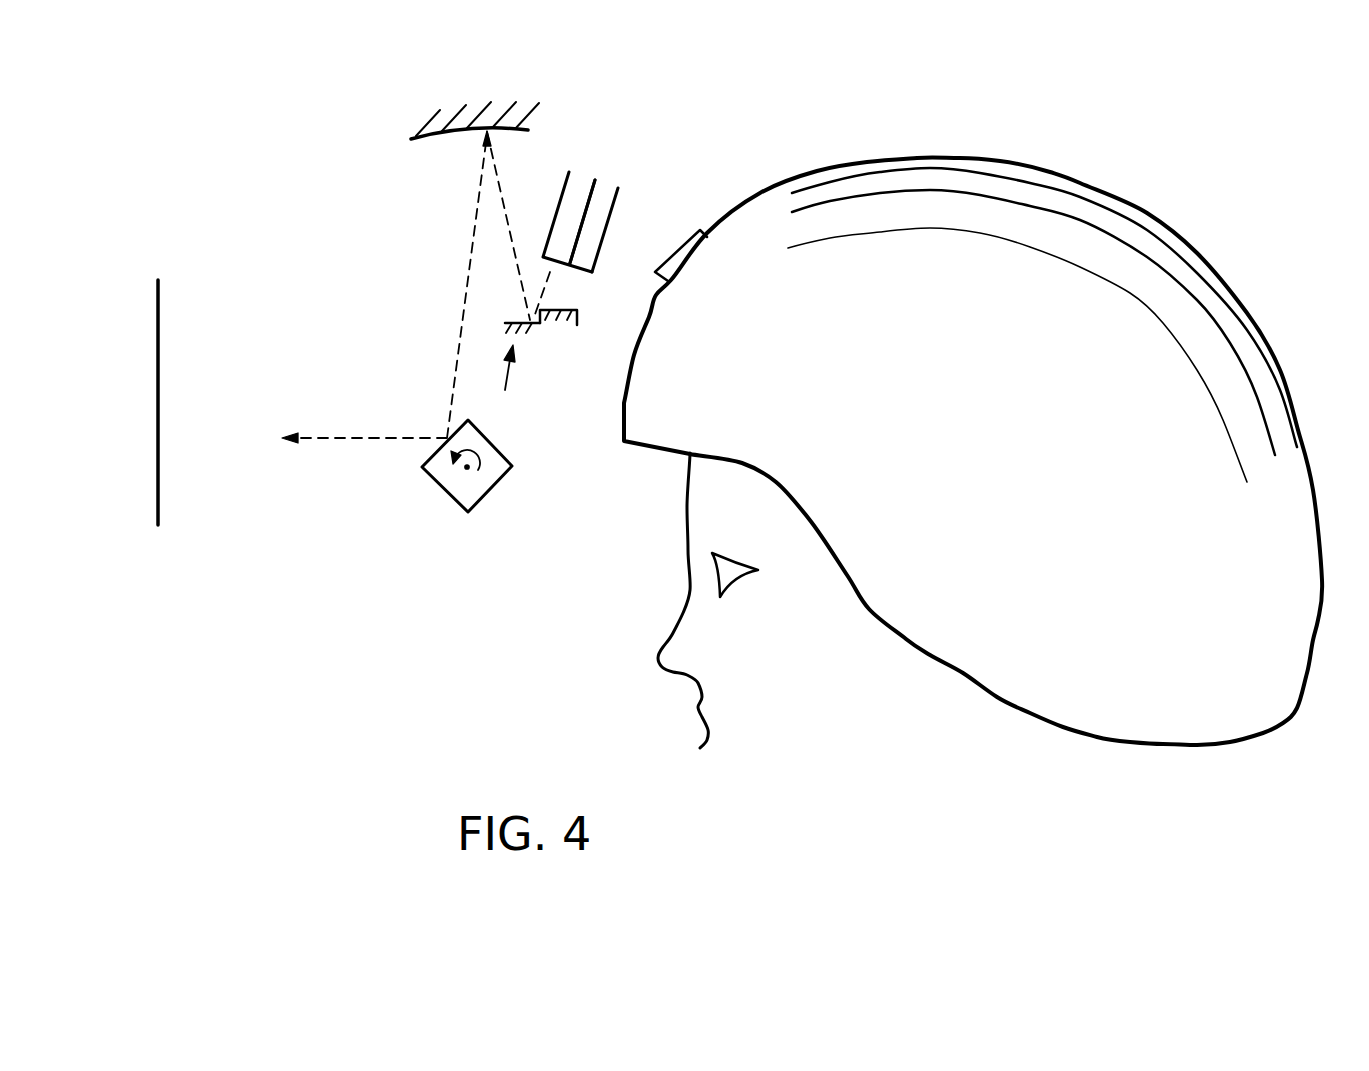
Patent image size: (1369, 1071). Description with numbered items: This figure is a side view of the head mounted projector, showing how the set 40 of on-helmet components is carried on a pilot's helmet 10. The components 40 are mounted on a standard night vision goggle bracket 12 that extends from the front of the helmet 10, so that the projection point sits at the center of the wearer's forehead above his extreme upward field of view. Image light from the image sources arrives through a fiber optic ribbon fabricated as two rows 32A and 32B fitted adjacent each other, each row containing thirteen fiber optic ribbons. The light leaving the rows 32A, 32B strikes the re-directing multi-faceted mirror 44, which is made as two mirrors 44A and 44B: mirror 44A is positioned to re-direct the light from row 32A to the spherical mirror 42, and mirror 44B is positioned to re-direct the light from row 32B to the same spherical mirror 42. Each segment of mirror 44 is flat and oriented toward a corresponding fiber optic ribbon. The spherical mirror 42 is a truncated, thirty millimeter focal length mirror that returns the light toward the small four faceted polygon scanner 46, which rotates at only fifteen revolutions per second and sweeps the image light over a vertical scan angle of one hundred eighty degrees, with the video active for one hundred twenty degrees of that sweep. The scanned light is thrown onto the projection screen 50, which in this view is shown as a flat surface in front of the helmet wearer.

The helmet 10 is at (977, 157).
The night vision goggle bracket 12 is at (700, 231).
The fiber optic ribbon row 32A is at (569, 197).
The fiber optic ribbon row 32B is at (606, 220).
The set of on-helmet components 40 is at (306, 243).
The spherical mirror 42 is at (413, 138).
The re-directing multi-faceted mirror 44 is at (503, 384).
The mirror 44A is at (516, 317).
The mirror 44B is at (570, 303).
The polygon scanner 46 is at (437, 482).
The projection screen 50 is at (160, 307).